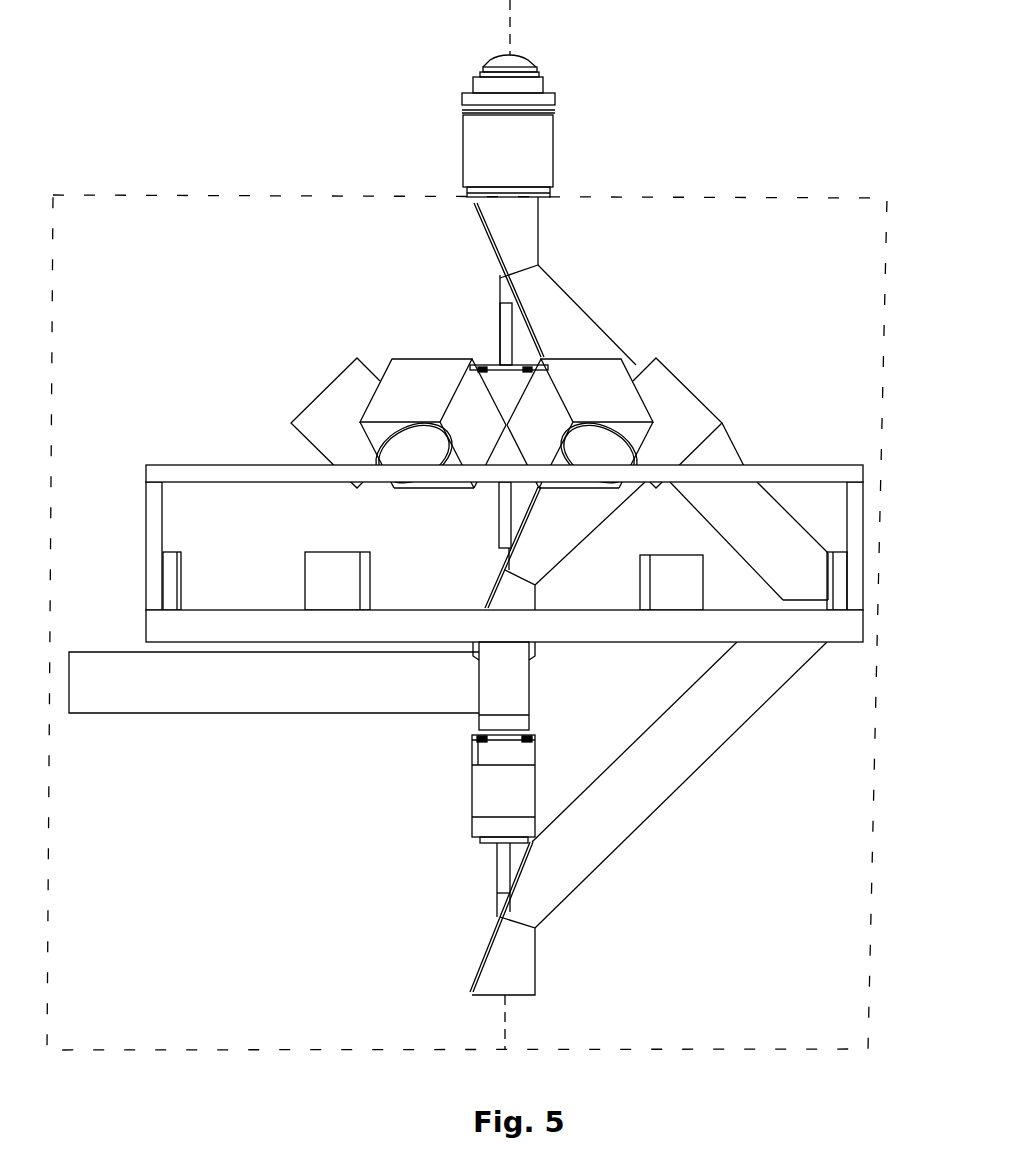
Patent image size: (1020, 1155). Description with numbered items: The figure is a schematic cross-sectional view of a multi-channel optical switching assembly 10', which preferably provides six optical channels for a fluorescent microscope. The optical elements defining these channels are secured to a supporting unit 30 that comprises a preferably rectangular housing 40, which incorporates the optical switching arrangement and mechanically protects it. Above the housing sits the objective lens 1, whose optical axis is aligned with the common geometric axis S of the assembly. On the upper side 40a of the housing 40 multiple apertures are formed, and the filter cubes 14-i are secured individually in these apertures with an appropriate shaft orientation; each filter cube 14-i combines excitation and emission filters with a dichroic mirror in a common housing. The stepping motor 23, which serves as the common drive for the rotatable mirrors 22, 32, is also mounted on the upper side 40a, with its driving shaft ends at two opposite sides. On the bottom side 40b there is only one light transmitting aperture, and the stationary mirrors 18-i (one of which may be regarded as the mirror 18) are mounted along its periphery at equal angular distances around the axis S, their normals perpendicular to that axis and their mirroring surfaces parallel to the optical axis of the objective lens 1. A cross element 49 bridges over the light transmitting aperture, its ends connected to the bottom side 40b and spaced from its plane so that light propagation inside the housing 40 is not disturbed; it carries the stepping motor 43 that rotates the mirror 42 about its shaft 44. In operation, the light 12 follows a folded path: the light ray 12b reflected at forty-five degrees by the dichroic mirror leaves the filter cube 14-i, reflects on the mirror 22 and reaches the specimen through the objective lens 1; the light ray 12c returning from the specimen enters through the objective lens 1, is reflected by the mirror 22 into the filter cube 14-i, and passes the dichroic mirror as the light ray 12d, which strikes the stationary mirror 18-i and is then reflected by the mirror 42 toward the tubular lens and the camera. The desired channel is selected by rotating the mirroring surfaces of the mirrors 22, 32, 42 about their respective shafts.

The objective lens 1 is at (550, 145).
The optical switching assembly 10' is at (467, 598).
The light ray 12 is at (228, 703).
The light ray 12b is at (553, 553).
The light ray 12c is at (567, 306).
The light ray 12d is at (785, 518).
The filter cube 14-i is at (438, 357).
The mirror 18 is at (535, 655).
The stationary mirror 18-i is at (167, 574).
The rotatable light guiding mirror 22 is at (485, 242).
The stepping motor 23 is at (501, 340).
The supporting unit 30 is at (852, 654).
The rotatable light guiding mirror 32 is at (490, 593).
The housing 40 is at (523, 587).
The upper side 40a is at (176, 461).
The bottom side 40b is at (677, 650).
The rotatable light guiding mirror 42 is at (482, 957).
The stepping motor 43 is at (472, 795).
The shaft 44 is at (497, 882).
The cross element 49 is at (528, 697).
The common geometric axis S is at (513, 18).